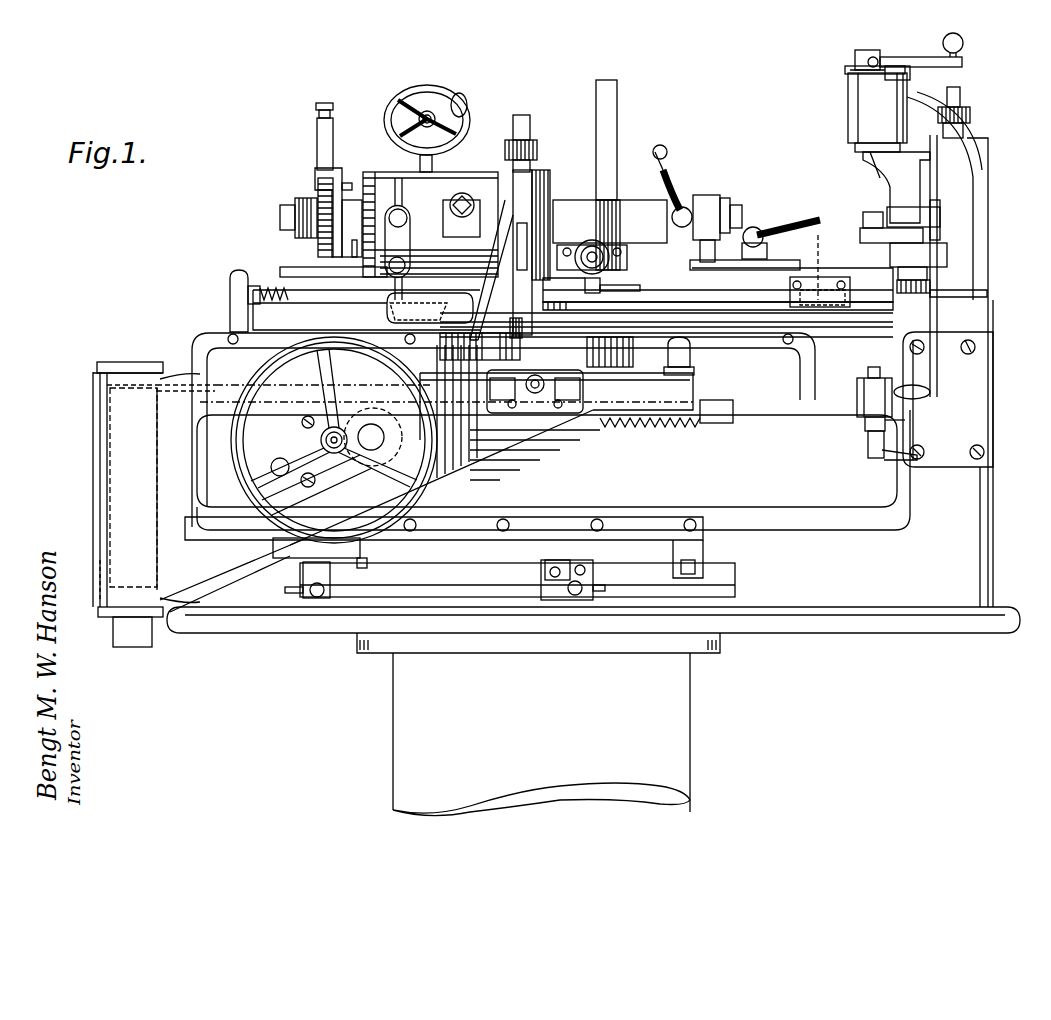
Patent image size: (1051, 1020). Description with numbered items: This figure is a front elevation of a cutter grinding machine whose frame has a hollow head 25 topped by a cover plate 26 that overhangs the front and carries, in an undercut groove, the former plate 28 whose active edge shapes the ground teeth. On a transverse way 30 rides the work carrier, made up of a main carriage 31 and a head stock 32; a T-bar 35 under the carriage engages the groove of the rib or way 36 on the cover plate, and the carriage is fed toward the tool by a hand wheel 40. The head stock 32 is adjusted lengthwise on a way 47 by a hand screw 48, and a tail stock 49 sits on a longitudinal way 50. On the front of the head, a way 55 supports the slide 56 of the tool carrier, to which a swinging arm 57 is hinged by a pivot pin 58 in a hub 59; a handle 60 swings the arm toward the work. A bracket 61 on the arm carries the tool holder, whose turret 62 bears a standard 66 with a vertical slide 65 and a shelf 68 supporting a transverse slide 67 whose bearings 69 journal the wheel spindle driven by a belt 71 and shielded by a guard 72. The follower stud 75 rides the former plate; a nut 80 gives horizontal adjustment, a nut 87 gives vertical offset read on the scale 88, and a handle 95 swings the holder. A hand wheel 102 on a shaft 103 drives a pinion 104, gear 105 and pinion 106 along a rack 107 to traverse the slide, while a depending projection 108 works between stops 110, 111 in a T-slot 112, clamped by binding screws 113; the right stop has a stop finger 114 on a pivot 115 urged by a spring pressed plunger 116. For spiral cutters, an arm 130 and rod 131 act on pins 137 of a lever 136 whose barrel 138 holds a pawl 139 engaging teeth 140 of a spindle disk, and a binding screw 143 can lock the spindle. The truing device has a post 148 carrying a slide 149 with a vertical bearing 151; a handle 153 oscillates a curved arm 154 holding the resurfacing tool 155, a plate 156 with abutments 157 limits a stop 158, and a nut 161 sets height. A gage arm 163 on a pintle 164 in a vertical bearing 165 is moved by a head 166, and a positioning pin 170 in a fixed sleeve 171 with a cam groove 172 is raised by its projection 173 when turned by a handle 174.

The hollow head 25 is at (802, 600).
The cover plate 26 is at (812, 330).
The former plate 28 is at (692, 330).
The way 30 is at (387, 312).
The main carriage 31 is at (652, 282).
The head stock 32 is at (460, 180).
The T-bar 35 is at (820, 248).
The rib or way 36 is at (830, 310).
The hand wheel 40 is at (452, 96).
The way 47 is at (290, 298).
The hand screw 48 is at (240, 278).
The tail stock 49 is at (725, 240).
The way 50 is at (790, 260).
The way 55 is at (655, 525).
The slide 56 is at (300, 562).
The swinging arm 57 is at (500, 445).
The pivot pin 58 is at (125, 362).
The hub 59 is at (97, 490).
The handle 60 is at (692, 358).
The bracket or tool support 61 is at (442, 350).
The turret 62 is at (633, 346).
The slide 65 is at (550, 200).
The standard 66 is at (468, 380).
The transverse slide 67 is at (666, 210).
The shelf 68 is at (645, 282).
The bearings 69 is at (580, 200).
The belt 71 is at (617, 105).
The guard 72 is at (540, 170).
The follower stud 75 is at (509, 327).
The nut 80 is at (612, 268).
The nut 87 is at (530, 140).
The scale 88 is at (512, 272).
The handle 95 is at (540, 395).
The hand wheel 102 is at (290, 478).
The shaft 103 is at (321, 438).
The pinion 104 is at (283, 458).
The gear 105 is at (373, 407).
The pinion 106 is at (366, 450).
The rack 107 is at (700, 420).
The depending projection 108 is at (368, 562).
The stop 110 is at (318, 575).
The stop 111 is at (556, 600).
The T-slot 112 is at (360, 592).
The binding screws 113 is at (292, 590).
The stop finger 114 is at (562, 576).
The pivot 115 is at (586, 574).
The spring pressed plunger 116 is at (562, 580).
The arm 130 is at (345, 252).
The rod 131 is at (355, 257).
The lever 136 is at (340, 172).
The pins 137 is at (348, 183).
The barrel or sleeve 138 is at (316, 139).
The spring pressed plunger or pawl 139 is at (326, 104).
The teeth 140 is at (316, 187).
The binding screw 143 is at (405, 222).
The standard or post 148 is at (965, 320).
The slide 149 is at (980, 240).
The vertical bearing 151 is at (850, 109).
The handle 153 is at (965, 46).
The curved arm 154 is at (895, 185).
The resurfacing tool 155 is at (925, 222).
The plate 156 is at (855, 62).
The abutments 157 is at (850, 74).
The stop 158 is at (912, 72).
The nut 161 is at (972, 114).
The swinging arm 163 is at (890, 236).
The pintle 164 is at (940, 222).
The vertical bearing 165 is at (900, 305).
The head 166 is at (930, 285).
The positioning pin 170 is at (866, 369).
The fixed sleeve 171 is at (865, 425).
The cam groove 172 is at (868, 440).
The projection 173 is at (887, 418).
The handle 174 is at (892, 457).